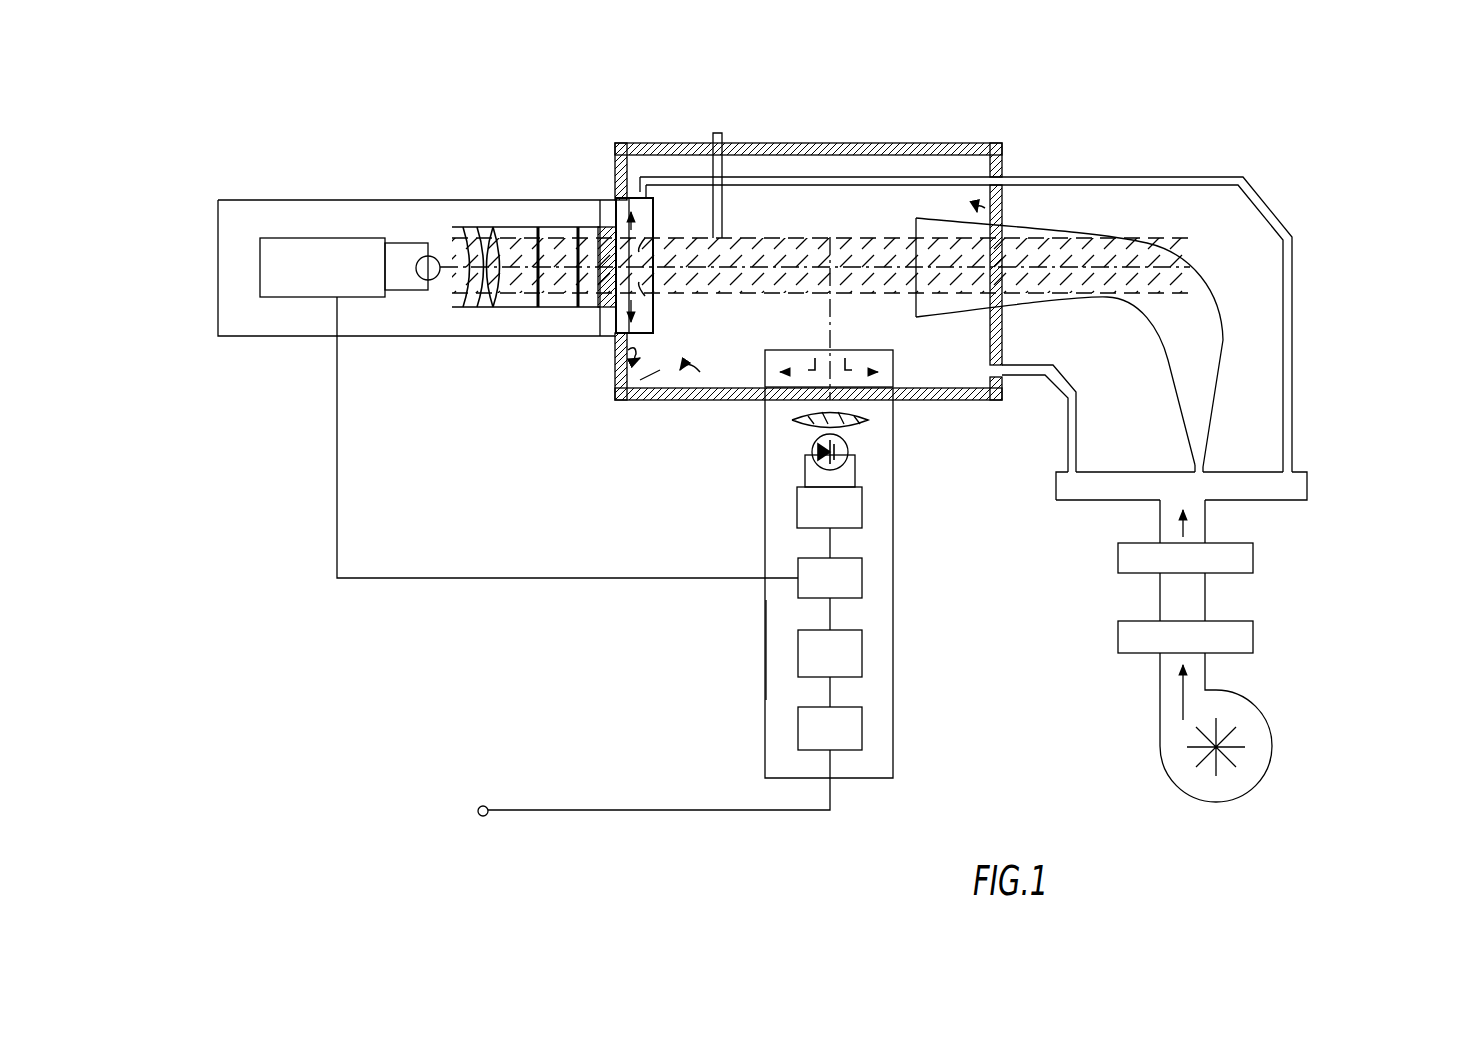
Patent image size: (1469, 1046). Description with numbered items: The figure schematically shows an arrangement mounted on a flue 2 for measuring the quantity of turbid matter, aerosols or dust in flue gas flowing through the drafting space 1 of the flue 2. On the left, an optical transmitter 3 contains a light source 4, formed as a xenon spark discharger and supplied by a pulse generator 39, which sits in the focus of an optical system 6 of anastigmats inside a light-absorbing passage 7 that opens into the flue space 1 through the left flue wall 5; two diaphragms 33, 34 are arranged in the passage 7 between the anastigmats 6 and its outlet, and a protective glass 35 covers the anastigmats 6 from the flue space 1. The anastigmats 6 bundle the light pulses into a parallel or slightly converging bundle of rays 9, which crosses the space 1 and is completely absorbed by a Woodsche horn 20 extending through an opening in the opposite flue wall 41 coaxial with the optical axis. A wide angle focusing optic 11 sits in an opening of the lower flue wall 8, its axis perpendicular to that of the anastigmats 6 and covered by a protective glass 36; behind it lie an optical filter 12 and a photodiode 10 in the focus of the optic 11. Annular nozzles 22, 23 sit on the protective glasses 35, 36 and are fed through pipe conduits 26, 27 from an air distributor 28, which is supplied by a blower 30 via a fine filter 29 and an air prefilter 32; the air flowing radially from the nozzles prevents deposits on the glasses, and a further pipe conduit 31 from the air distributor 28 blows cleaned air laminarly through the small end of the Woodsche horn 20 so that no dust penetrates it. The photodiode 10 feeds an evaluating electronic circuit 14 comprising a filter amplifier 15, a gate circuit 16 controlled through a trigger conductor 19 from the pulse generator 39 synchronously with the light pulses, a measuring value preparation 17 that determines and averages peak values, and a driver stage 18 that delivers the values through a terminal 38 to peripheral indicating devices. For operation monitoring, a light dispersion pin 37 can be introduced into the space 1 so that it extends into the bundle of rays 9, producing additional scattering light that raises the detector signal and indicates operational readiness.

The drafting space 1 is at (728, 352).
The flue 2 is at (755, 125).
The optical transmitter 3 is at (200, 236).
The light source 4 is at (424, 300).
The left flue wall 5 is at (633, 353).
The optical system 6 is at (470, 318).
The passage 7 is at (523, 227).
The lower flue wall 8 is at (633, 402).
The bundle of rays 9 is at (803, 253).
The photodiode 10 is at (813, 450).
The wide angle focusing optic 11 is at (795, 420).
The optical filter 12 is at (897, 405).
The evaluating electronic circuit 14 is at (784, 606).
The filter amplifier 15 is at (827, 507).
The gate circuit 16 is at (832, 572).
The measuring value preparation 17 is at (832, 647).
The driver stage 18 is at (828, 723).
The trigger conductor 19 is at (337, 557).
The Woodsche horn 20 is at (948, 232).
The annular nozzle 22 is at (615, 350).
The annular nozzle 23 is at (793, 362).
The pipe conduit 26 is at (1263, 200).
The pipe conduit 27 is at (1073, 427).
The air distributor 28 is at (1283, 490).
The fine filter 29 is at (1227, 563).
The blower 30 is at (1260, 745).
The further pipe conduit 31 is at (1203, 463).
The air prefilter 32 is at (1223, 642).
The diaphragm 33 is at (538, 227).
The diaphragm 34 is at (580, 227).
The protective glass 35 is at (605, 227).
The protective glass 36 is at (900, 393).
The light dispersion pin 37 is at (715, 133).
The terminal 38 is at (479, 815).
The pulse generator 39 is at (297, 262).
The flue wall 41 is at (975, 212).